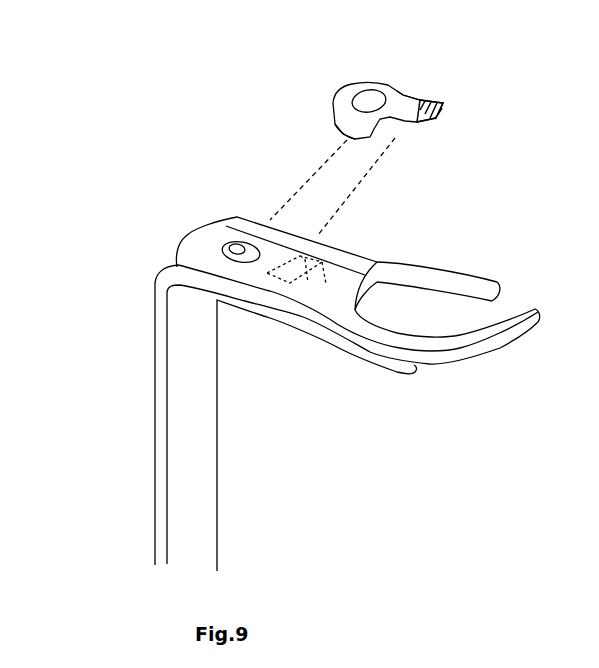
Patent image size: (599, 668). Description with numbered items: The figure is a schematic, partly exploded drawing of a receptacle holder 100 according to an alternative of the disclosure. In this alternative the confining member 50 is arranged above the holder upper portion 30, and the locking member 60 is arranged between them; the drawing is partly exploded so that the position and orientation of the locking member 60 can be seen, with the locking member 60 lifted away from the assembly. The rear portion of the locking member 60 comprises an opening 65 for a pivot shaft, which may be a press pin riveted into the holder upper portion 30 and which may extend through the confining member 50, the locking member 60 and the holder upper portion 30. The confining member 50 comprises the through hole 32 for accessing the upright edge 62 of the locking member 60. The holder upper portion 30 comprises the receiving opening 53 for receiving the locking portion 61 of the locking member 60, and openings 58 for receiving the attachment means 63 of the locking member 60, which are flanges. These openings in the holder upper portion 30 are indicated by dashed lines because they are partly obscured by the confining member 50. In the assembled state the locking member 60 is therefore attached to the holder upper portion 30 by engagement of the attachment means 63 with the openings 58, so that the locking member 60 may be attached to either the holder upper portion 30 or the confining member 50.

The mounting assembly 100 is at (120, 135).
The holder upper portion 30 is at (397, 272).
The through hole 32 is at (305, 258).
The confining member 50 is at (318, 337).
The receiving opening 53 is at (283, 287).
The openings 58 is at (230, 230).
The locking member 60 is at (398, 91).
The locking portion 61 is at (409, 108).
The upright edge 62 is at (439, 103).
The attachment means 63 is at (331, 128).
The opening 65 is at (366, 100).